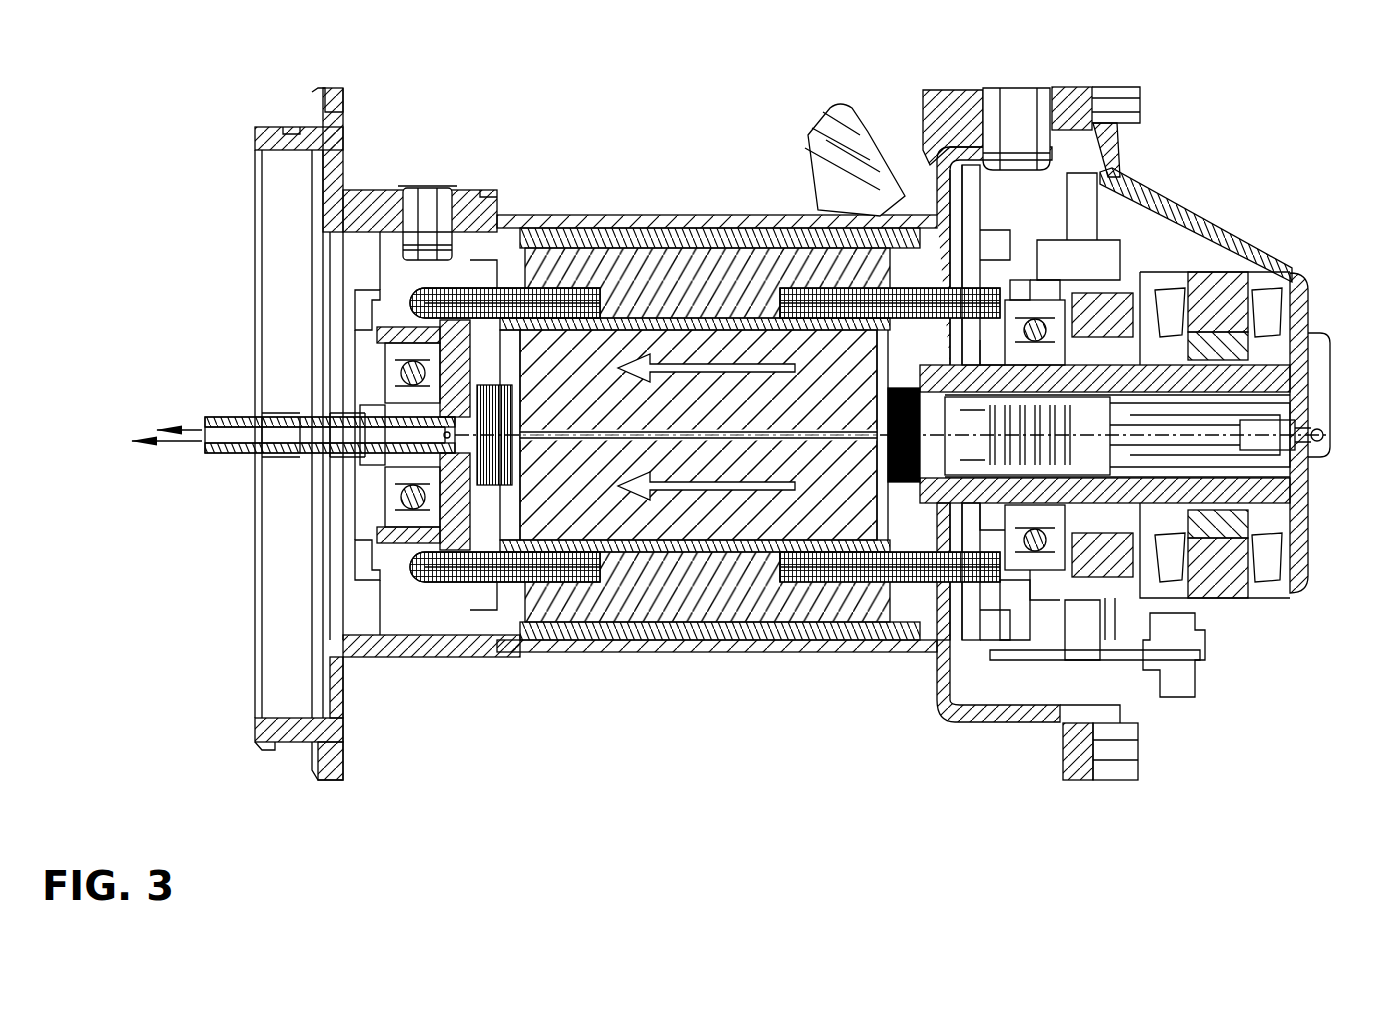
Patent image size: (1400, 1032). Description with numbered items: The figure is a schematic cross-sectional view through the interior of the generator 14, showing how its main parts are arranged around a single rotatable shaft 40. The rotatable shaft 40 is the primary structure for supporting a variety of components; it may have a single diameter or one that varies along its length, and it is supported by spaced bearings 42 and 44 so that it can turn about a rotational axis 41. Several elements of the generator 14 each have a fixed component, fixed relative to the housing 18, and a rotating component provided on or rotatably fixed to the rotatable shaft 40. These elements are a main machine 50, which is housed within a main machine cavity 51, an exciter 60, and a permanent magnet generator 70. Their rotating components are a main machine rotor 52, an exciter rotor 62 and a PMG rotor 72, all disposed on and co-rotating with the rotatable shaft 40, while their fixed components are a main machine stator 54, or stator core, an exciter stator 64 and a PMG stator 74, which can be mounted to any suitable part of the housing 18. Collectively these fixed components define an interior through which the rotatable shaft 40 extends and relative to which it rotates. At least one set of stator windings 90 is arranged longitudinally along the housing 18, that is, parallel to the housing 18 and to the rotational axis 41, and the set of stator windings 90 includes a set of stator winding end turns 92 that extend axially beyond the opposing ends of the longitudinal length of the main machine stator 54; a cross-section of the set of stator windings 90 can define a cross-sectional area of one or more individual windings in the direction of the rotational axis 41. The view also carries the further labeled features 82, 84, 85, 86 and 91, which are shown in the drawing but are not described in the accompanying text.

The generator 14 is at (530, 100).
The housing 18 is at (548, 222).
The rotatable shaft 40 is at (290, 477).
The rotational axis 41 is at (1330, 440).
The bearing 42 is at (395, 512).
The bearing 44 is at (1013, 690).
The main machine 50 is at (630, 165).
The main machine cavity 51 is at (493, 261).
The main machine rotor 52 is at (553, 520).
The main machine stator 54 is at (657, 600).
The exciter 60 is at (1222, 262).
The exciter rotor 62 is at (1228, 517).
The exciter stator 64 is at (1225, 572).
The permanent magnet generator 70 is at (1133, 272).
The PMG rotor 72 is at (1110, 553).
The PMG stator 74 is at (1130, 650).
The fastener 82 is at (425, 225).
The electrical connector 84 is at (800, 125).
The rotor flow path 85 is at (660, 485).
The end housing 86 is at (940, 700).
The stator windings 90 is at (790, 300).
The coolant outlet flow 91 is at (200, 408).
The stator winding end turns 92 is at (918, 268).